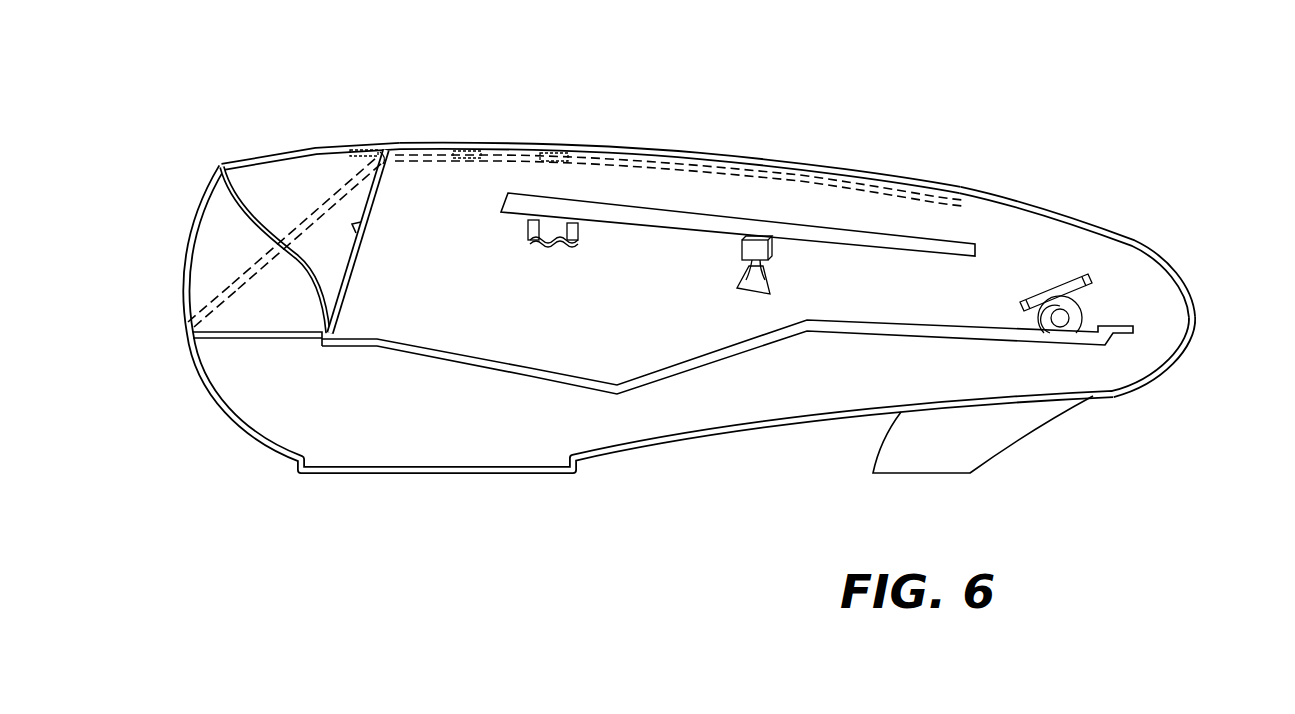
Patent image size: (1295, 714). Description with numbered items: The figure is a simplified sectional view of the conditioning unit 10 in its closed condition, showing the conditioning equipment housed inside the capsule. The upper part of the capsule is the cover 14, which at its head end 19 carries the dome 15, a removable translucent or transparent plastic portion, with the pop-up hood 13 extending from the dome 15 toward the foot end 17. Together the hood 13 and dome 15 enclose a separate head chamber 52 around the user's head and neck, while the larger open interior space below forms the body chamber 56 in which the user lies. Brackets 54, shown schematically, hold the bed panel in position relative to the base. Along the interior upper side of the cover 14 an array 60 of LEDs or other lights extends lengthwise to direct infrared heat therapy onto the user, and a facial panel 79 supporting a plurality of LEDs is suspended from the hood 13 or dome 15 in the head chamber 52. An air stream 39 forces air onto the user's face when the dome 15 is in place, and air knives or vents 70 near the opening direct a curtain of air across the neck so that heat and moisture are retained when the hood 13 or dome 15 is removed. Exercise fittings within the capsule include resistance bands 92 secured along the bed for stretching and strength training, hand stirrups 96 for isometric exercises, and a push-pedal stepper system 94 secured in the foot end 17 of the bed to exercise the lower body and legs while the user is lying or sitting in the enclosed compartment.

The conditioning unit 10 is at (975, 160).
The pop-up hood 13 is at (697, 148).
The cover 14 is at (1130, 195).
The dome 15 is at (244, 152).
The foot end 17 is at (1217, 323).
The head end 19 is at (228, 228).
The air stream 39 is at (338, 186).
The head chamber 52 is at (215, 318).
The brackets 54 is at (330, 330).
The body chamber 56 is at (905, 294).
The array of LEDs or other lights 60 is at (622, 214).
The air knives or vents 70 is at (364, 148).
The facial panel 79 is at (385, 150).
The exercise resistance bands 92 is at (527, 247).
The push-pedal stepper system 94 is at (1115, 297).
The hand stirrups 96 is at (742, 252).